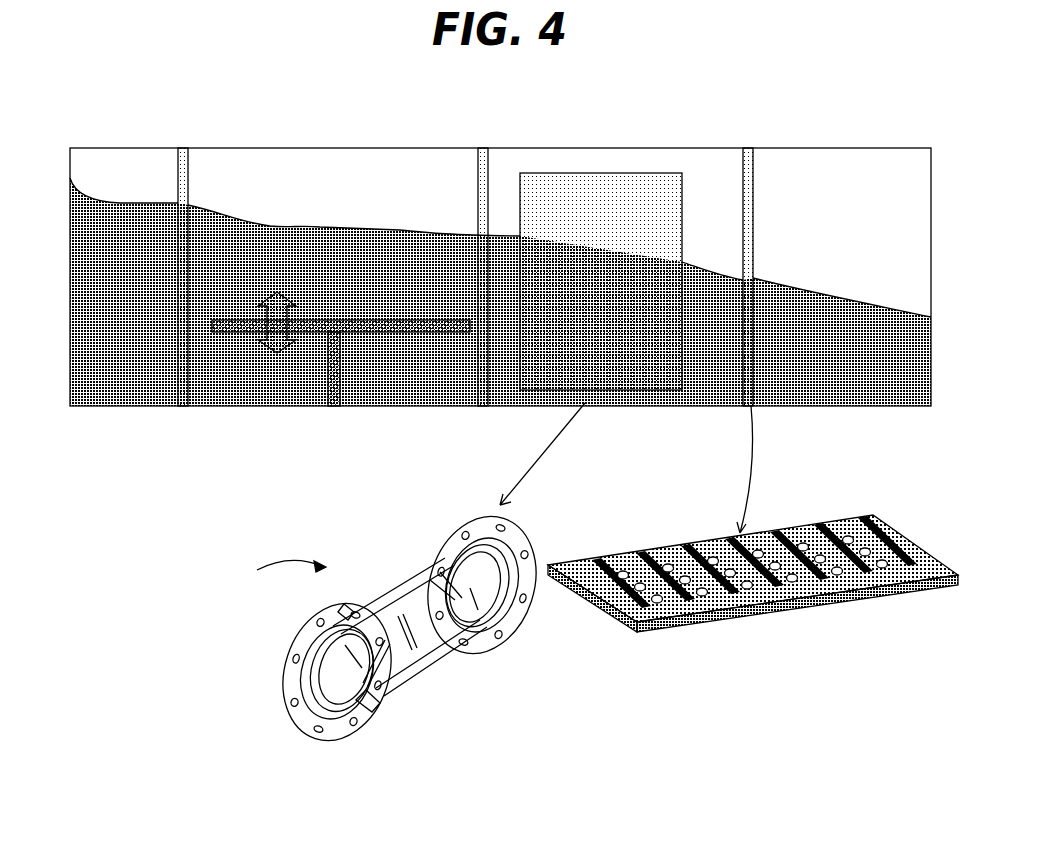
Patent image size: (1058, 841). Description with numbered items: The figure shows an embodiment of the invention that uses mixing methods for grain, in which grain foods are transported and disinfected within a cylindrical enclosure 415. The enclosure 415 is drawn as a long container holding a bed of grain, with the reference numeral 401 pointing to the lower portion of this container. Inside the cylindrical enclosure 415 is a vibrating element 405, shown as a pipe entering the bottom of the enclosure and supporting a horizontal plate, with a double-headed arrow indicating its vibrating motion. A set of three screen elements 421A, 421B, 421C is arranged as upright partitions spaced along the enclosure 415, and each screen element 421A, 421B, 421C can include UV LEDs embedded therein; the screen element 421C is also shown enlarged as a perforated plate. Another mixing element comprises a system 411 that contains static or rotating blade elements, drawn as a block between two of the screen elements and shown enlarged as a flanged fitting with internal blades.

The tank / filter bed 401 is at (107, 405).
The vibrating element 405 is at (330, 405).
The system containing static or rotating blade elements 411 is at (619, 283).
The cylindrical enclosure 415 is at (859, 124).
The screen element 421A is at (180, 148).
The screen element 421B is at (483, 148).
The screen element 421C is at (745, 148).